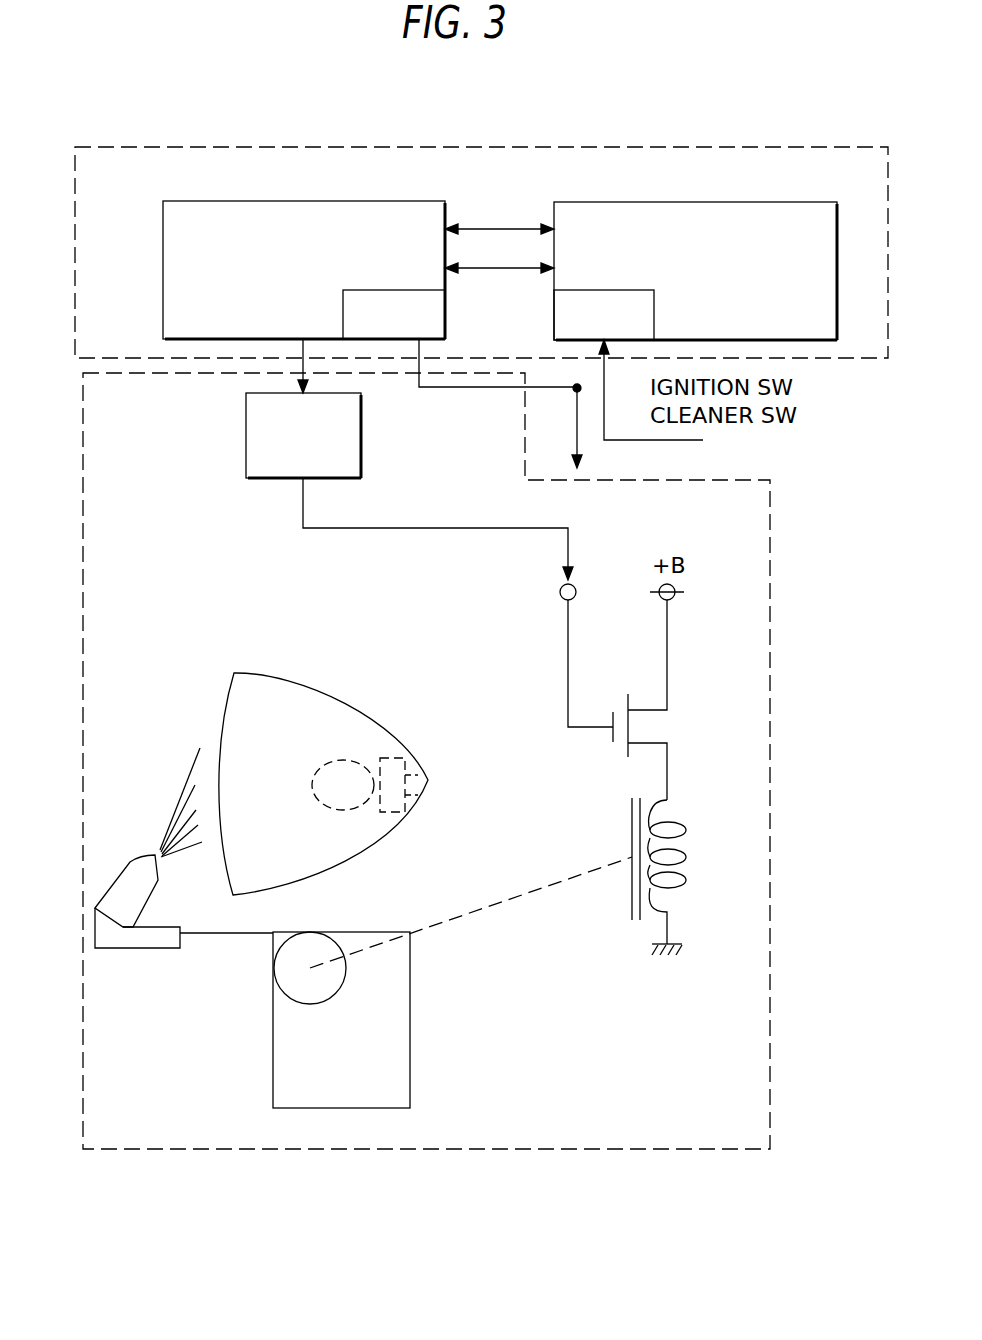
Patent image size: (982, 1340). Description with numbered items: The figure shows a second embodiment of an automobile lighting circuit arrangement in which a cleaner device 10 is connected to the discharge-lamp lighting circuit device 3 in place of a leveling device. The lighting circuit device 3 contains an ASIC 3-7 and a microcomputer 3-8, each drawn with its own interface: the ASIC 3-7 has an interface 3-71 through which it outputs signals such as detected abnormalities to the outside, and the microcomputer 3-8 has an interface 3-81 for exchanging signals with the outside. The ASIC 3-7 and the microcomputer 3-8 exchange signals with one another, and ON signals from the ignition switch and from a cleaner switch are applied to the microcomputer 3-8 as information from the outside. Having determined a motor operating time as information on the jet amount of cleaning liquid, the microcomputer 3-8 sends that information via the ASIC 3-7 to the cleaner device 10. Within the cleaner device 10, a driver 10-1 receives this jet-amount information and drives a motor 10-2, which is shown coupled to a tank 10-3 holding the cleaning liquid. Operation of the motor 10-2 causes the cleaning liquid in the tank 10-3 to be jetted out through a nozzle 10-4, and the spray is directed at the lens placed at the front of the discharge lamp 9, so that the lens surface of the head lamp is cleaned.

The discharge-lamp lighting circuit device 3 is at (75, 273).
The ASIC 3-7 is at (337, 201).
The interface 3-71 is at (445, 330).
The microcomputer 3-8 is at (737, 202).
The interface 3-81 is at (554, 306).
The cleaner device 10 is at (82, 552).
The driver 10-1 is at (361, 467).
The motor 10-2 is at (325, 948).
The tank 10-3 is at (273, 1010).
The nozzle 10-4 is at (128, 883).
The discharge lamp 9 is at (345, 767).